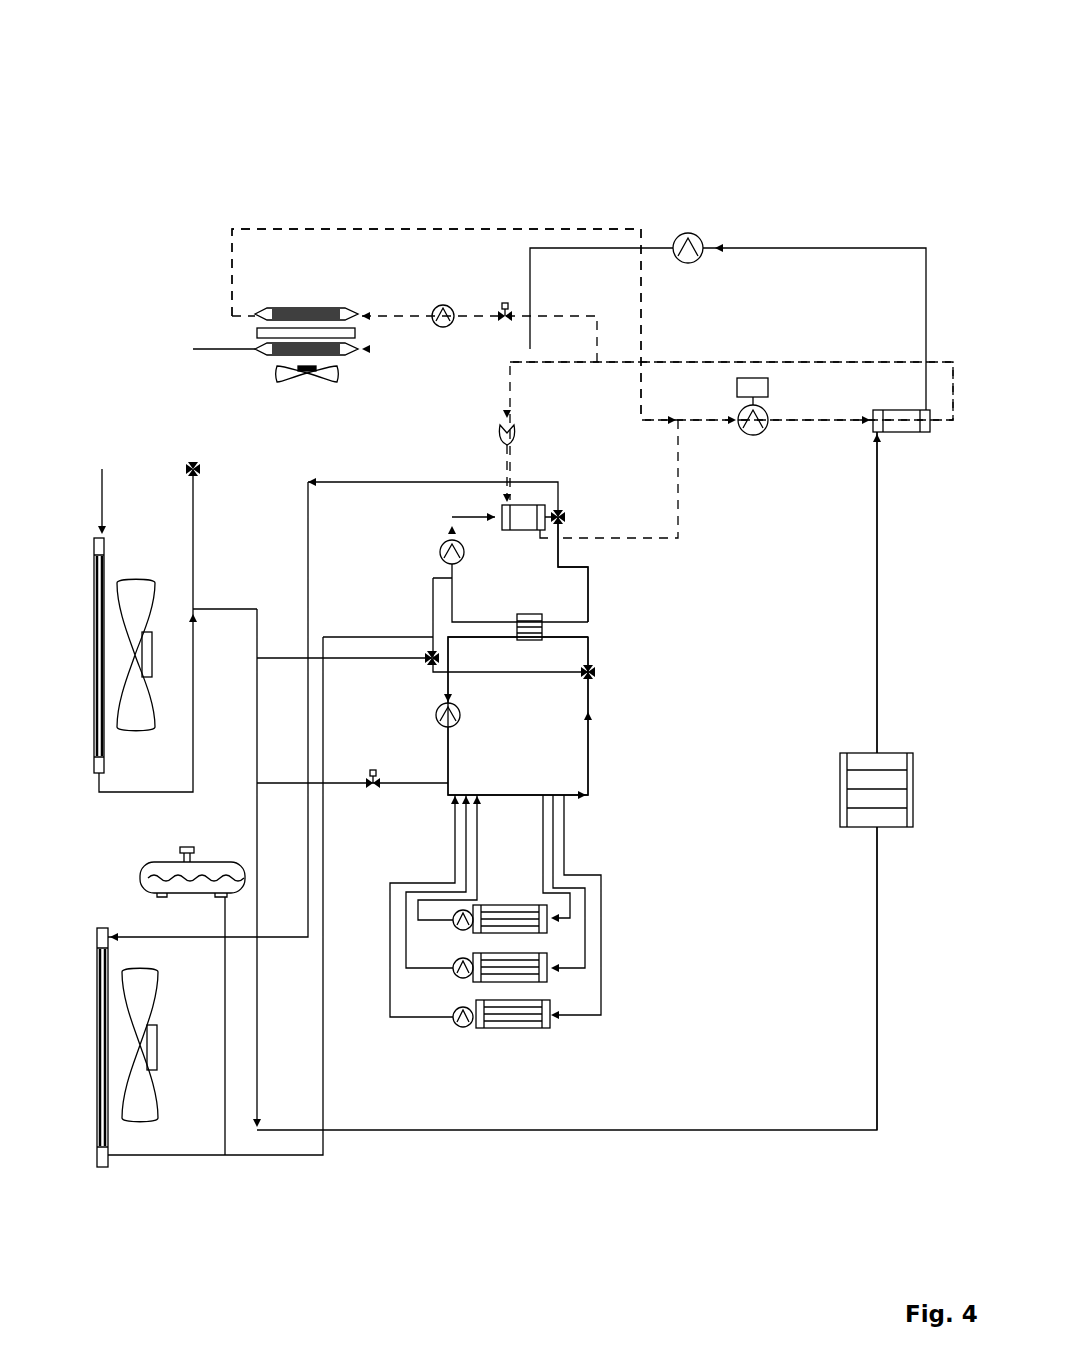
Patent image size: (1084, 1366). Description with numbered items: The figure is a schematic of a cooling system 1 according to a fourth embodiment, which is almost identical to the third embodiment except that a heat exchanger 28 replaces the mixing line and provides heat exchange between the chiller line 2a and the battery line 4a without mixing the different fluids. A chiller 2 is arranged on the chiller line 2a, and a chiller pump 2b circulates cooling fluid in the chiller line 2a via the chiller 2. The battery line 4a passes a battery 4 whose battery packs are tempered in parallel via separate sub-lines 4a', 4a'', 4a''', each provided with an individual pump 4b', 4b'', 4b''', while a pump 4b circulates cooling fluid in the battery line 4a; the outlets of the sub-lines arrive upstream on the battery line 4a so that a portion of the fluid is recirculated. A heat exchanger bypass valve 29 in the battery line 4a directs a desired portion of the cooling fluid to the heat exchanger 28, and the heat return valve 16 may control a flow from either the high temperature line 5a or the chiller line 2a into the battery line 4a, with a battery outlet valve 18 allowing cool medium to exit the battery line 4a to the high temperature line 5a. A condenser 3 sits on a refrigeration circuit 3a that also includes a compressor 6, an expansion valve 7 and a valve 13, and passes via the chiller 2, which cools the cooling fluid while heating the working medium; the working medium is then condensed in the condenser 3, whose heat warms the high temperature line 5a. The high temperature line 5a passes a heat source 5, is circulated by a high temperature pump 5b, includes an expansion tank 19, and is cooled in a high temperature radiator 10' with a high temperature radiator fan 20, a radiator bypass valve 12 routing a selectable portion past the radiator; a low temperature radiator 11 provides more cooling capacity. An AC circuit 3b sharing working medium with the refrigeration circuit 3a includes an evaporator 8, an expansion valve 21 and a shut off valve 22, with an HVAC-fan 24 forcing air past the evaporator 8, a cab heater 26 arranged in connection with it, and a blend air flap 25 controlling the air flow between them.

The cooling system 1 is at (290, 112).
The chiller 2 is at (520, 530).
The chiller line 2a is at (589, 583).
The chiller pump 2b is at (441, 548).
The condenser 3 is at (893, 432).
The refrigeration circuit 3a is at (845, 362).
The AC circuit 3b is at (232, 243).
The battery 4 is at (549, 1053).
The battery line 4a is at (518, 716).
The sub-line 4a' is at (578, 1028).
The sub-line 4a'' is at (578, 971).
The sub-line 4a''' is at (580, 919).
The pump 4b is at (416, 713).
The individual pump 4b' is at (443, 1040).
The individual pump 4b'' is at (440, 982).
The individual pump 4b''' is at (445, 937).
The heat source 5 is at (852, 753).
The high temperature line 5a is at (877, 650).
The high temperature pump 5b is at (688, 233).
The compressor 6 is at (753, 435).
The expansion valve 7 is at (495, 438).
The evaporator 8 is at (320, 308).
The high temperature radiator 10' is at (69, 655).
The low temperature radiator 11 is at (97, 1043).
The radiator bypass valve 12 is at (200, 468).
The three-way valve 13 is at (562, 510).
The heat return valve 16 is at (438, 651).
The battery outlet valve 18 is at (375, 790).
The expansion tank 19 is at (140, 880).
The high temperature radiator fan 20 is at (130, 583).
The expansion valve 21 is at (443, 305).
The shut off valve 22 is at (505, 303).
The HVAC-fan 24 is at (328, 380).
The blend air flap 25 is at (257, 331).
The cab heater 26 is at (255, 349).
The heat exchanger 28 is at (542, 615).
The heat exchanger bypass valve 29 is at (596, 668).